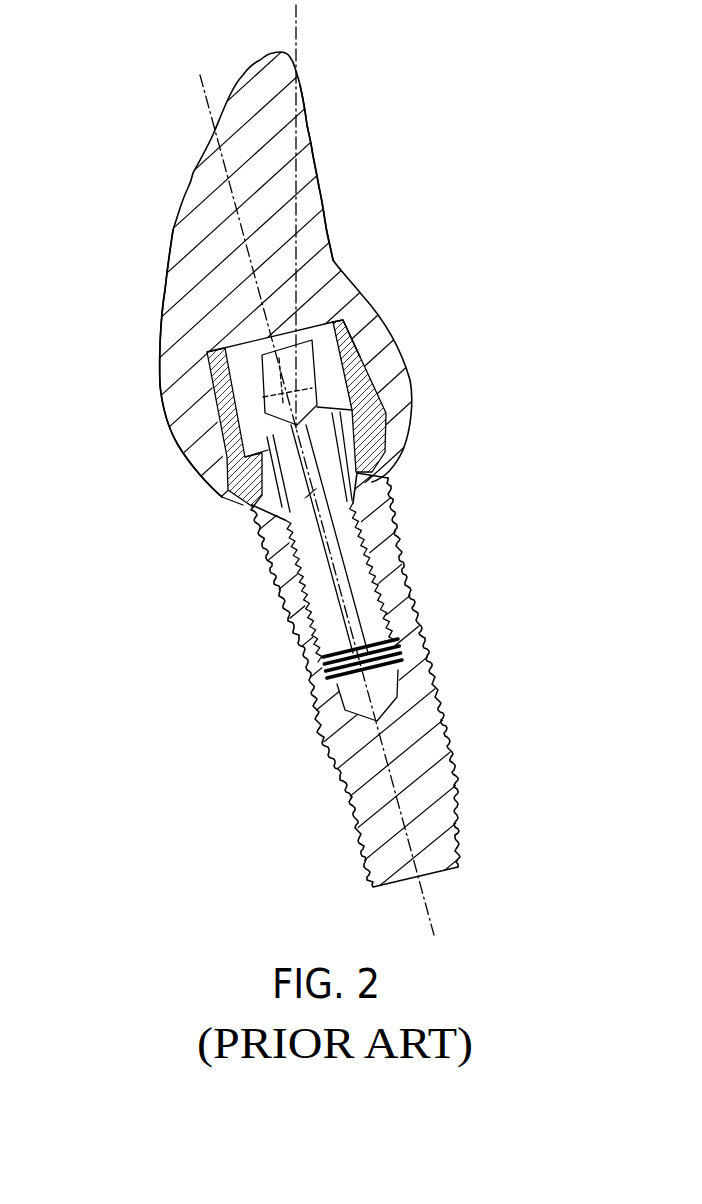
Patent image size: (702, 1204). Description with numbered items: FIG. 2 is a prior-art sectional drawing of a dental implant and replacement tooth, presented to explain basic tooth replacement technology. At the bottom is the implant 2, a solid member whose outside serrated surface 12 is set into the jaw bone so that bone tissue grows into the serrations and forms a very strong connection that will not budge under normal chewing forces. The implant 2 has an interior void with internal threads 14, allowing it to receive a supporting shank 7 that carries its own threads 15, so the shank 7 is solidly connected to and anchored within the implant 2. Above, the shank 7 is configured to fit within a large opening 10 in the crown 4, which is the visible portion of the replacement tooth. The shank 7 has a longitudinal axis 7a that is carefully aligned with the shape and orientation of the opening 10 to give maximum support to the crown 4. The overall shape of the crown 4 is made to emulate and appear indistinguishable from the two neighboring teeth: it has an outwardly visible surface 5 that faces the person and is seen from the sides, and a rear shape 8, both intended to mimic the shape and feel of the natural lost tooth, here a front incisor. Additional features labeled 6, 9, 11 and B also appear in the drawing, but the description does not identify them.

The implant 2 is at (450, 725).
The crown 4 is at (176, 180).
The outwardly visible surface 5 is at (165, 268).
The crown cervical portion 6 is at (183, 453).
The shank 7 is at (352, 584).
The longitudinal axis 7a is at (203, 87).
The rear shape 8 is at (323, 181).
The abutment 9 is at (267, 357).
The large opening 10 is at (371, 380).
The abutment upper edge 11 is at (343, 312).
The outside serrated surface 12 is at (412, 613).
The internal threads 14 is at (313, 625).
The threads 15 is at (345, 712).
The crown axis B is at (297, 13).